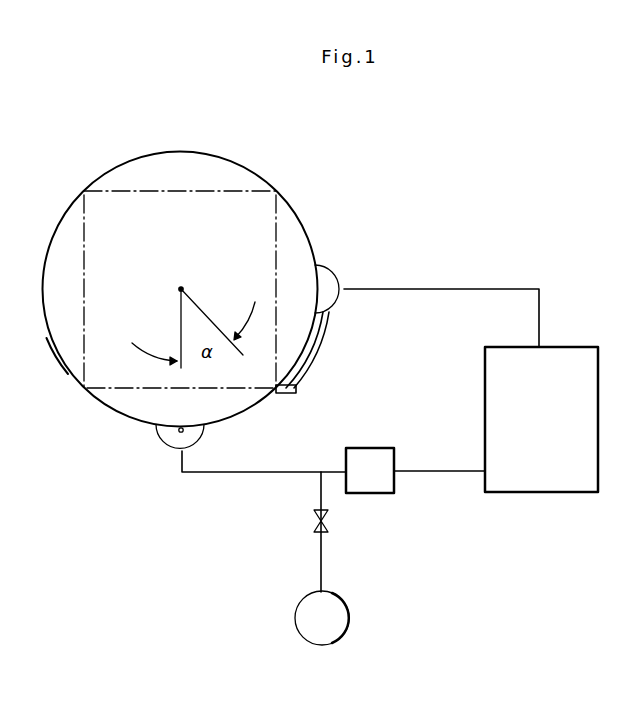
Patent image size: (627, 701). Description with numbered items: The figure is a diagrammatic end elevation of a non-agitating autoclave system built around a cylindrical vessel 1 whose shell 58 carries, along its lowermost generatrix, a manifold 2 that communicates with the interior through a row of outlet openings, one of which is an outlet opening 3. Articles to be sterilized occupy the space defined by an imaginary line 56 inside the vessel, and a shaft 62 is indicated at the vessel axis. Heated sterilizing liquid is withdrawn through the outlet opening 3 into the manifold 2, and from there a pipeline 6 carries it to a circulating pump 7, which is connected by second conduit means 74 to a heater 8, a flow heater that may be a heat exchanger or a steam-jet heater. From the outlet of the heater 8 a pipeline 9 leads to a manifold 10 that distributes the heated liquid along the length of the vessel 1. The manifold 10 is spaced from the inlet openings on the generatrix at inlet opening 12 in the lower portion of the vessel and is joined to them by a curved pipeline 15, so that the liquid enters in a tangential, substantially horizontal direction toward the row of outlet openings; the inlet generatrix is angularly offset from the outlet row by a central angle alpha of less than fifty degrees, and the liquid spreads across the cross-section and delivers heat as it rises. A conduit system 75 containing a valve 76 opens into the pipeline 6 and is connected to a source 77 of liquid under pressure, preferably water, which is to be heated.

The vessel 1 is at (230, 162).
The manifold 2 is at (170, 441).
The outlet opening 3 is at (181, 427).
The pipeline 6 is at (268, 473).
The circulating pump 7 is at (372, 485).
The heater 8 is at (548, 492).
The pipeline 9 is at (460, 287).
The manifold 10 is at (329, 280).
The inlet opening 12 is at (281, 410).
The curved pipeline 15 is at (320, 352).
The imaginary line 56 is at (83, 274).
The shell 58 is at (55, 350).
The shaft 62 is at (195, 283).
The line II 74 is at (462, 473).
The conduit system 75 is at (320, 560).
The valve 76 is at (325, 522).
The source 77 is at (326, 636).